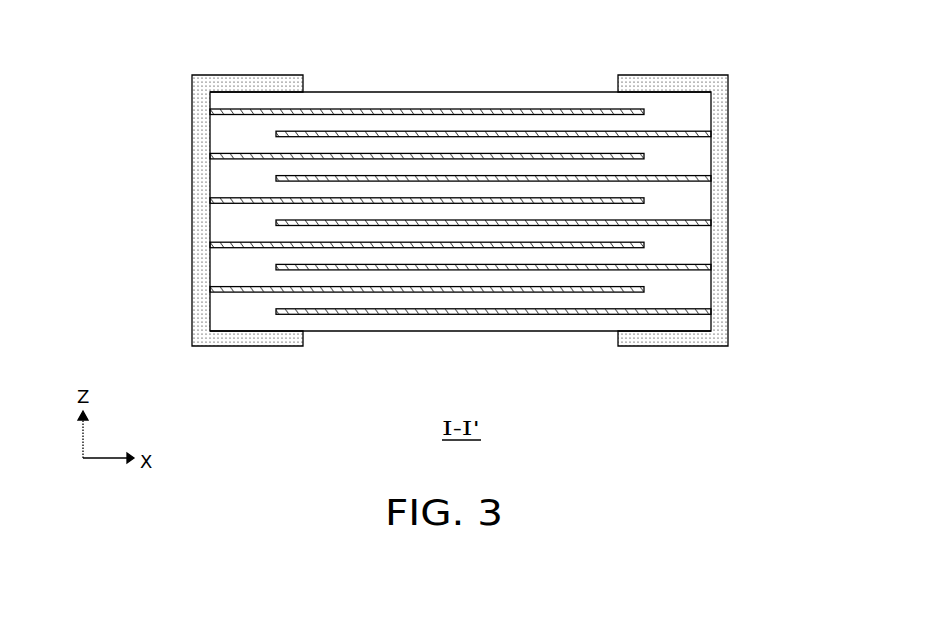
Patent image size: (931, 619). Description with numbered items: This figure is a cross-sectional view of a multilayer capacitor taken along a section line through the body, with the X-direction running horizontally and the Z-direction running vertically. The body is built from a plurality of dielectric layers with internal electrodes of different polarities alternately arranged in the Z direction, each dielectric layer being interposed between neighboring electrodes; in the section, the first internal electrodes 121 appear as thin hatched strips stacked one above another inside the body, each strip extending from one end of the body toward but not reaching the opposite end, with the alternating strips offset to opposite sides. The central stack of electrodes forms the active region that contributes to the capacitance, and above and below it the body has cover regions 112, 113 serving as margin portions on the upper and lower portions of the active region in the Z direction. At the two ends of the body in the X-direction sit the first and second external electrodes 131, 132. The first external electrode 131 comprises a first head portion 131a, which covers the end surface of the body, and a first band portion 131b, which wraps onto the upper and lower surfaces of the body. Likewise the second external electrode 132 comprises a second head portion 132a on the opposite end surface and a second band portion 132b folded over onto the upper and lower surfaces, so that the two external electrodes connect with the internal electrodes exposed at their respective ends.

The cover region 112 is at (464, 92).
The cover region 113 is at (489, 331).
The first internal electrode 121 is at (355, 109).
The first external electrode 131 is at (173, 197).
The first head portion 131a is at (201, 119).
The first band portion 131b is at (240, 82).
The second external electrode 132 is at (748, 197).
The second head portion 132a is at (720, 119).
The second band portion 132b is at (683, 82).